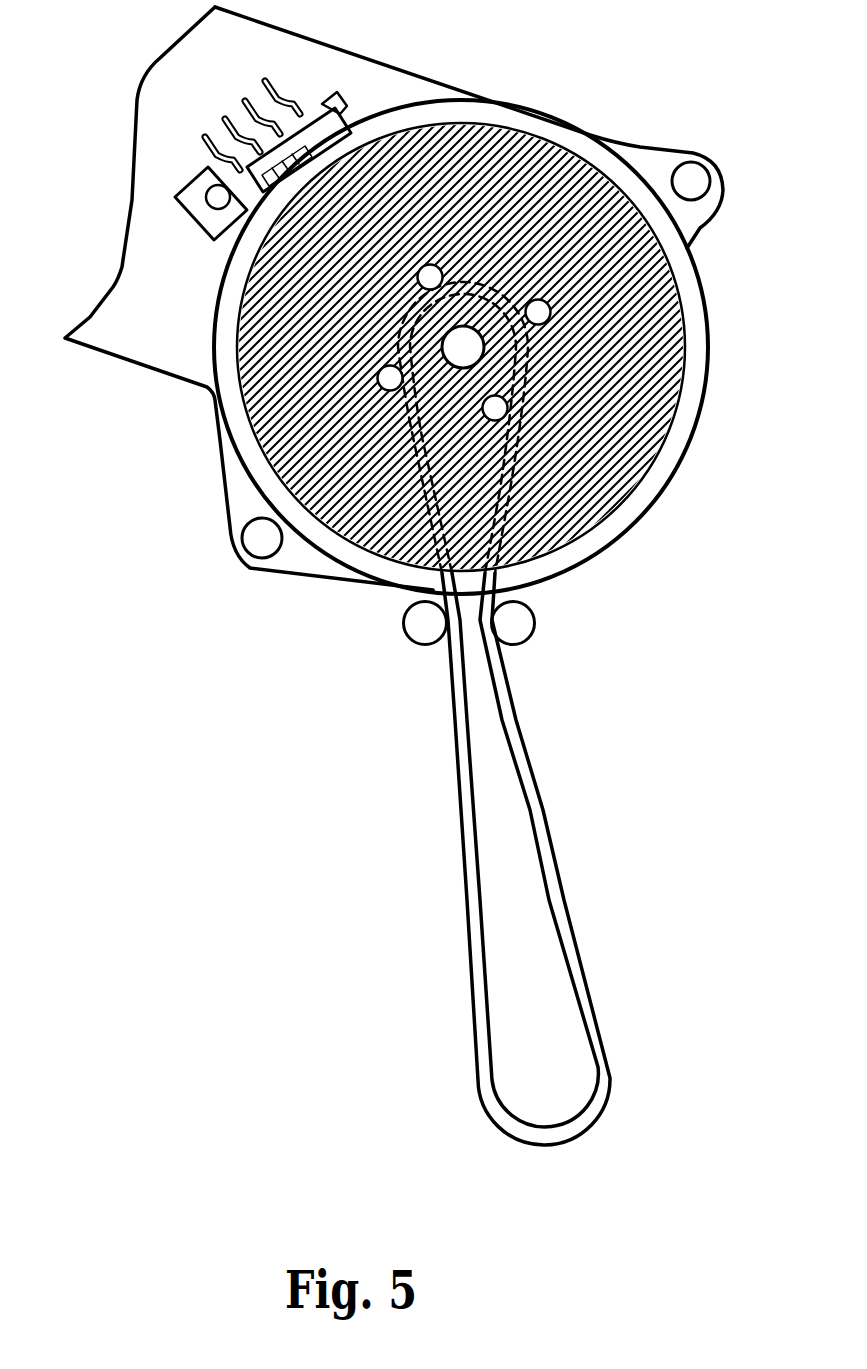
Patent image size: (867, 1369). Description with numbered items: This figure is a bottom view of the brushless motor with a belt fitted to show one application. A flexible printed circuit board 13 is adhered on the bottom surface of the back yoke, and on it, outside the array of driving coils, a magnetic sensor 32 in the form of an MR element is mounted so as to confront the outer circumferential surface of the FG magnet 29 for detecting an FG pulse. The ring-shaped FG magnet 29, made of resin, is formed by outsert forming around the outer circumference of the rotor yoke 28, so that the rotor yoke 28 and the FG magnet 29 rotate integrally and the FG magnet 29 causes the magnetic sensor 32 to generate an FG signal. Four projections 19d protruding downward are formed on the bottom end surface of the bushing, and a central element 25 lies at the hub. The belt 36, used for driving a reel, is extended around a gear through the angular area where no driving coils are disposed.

The flexible printed circuit board 13 is at (305, 60).
The magnetic sensor 32 is at (247, 117).
The FG magnet 29 is at (535, 128).
The rotor yoke 28 is at (600, 463).
The hub 25 is at (465, 347).
The projections 19d is at (300, 463).
The belt 36 is at (533, 813).